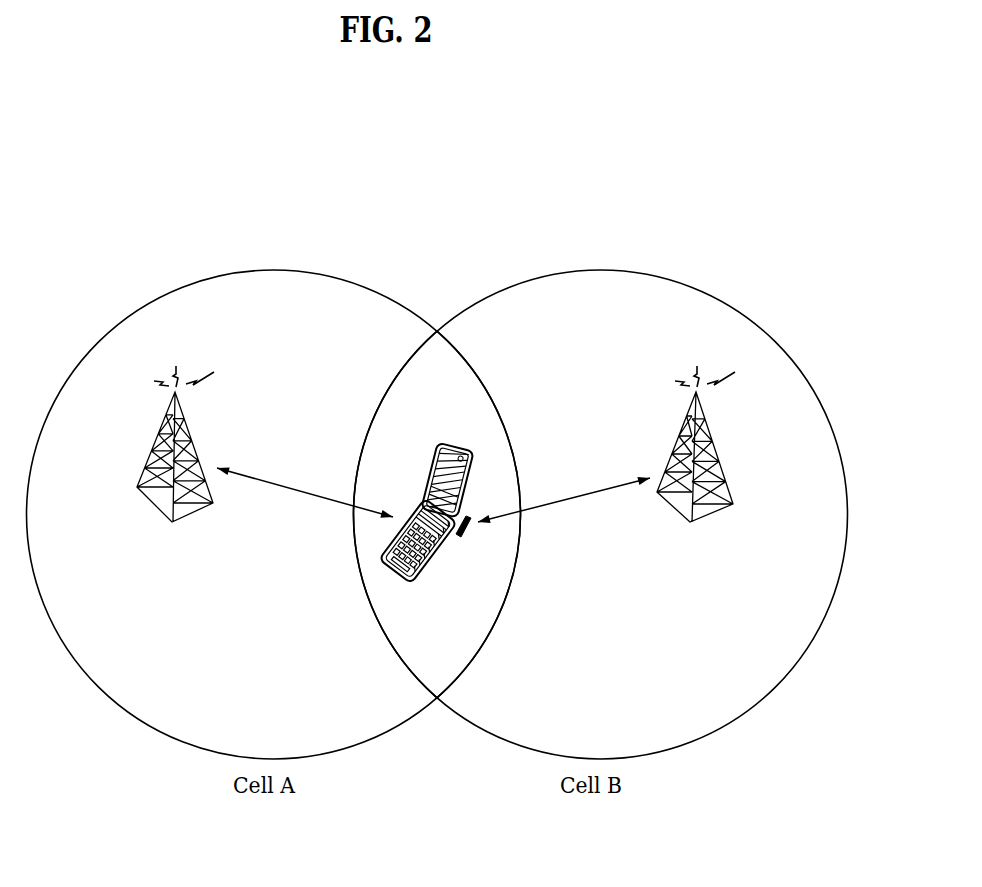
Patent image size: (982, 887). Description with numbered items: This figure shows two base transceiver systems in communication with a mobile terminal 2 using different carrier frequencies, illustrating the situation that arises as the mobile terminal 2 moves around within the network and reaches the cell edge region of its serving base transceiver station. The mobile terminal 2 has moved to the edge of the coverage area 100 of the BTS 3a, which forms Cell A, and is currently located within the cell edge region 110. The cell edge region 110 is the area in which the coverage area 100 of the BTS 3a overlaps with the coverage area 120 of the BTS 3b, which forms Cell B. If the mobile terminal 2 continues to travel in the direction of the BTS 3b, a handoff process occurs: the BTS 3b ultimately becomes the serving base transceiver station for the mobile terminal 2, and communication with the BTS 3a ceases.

The coverage area 100 is at (247, 270).
The coverage area 120 is at (646, 270).
The cell edge region 110 is at (439, 330).
The BTS 3a is at (172, 523).
The BTS 3b is at (690, 523).
The mobile terminal 2 is at (410, 590).